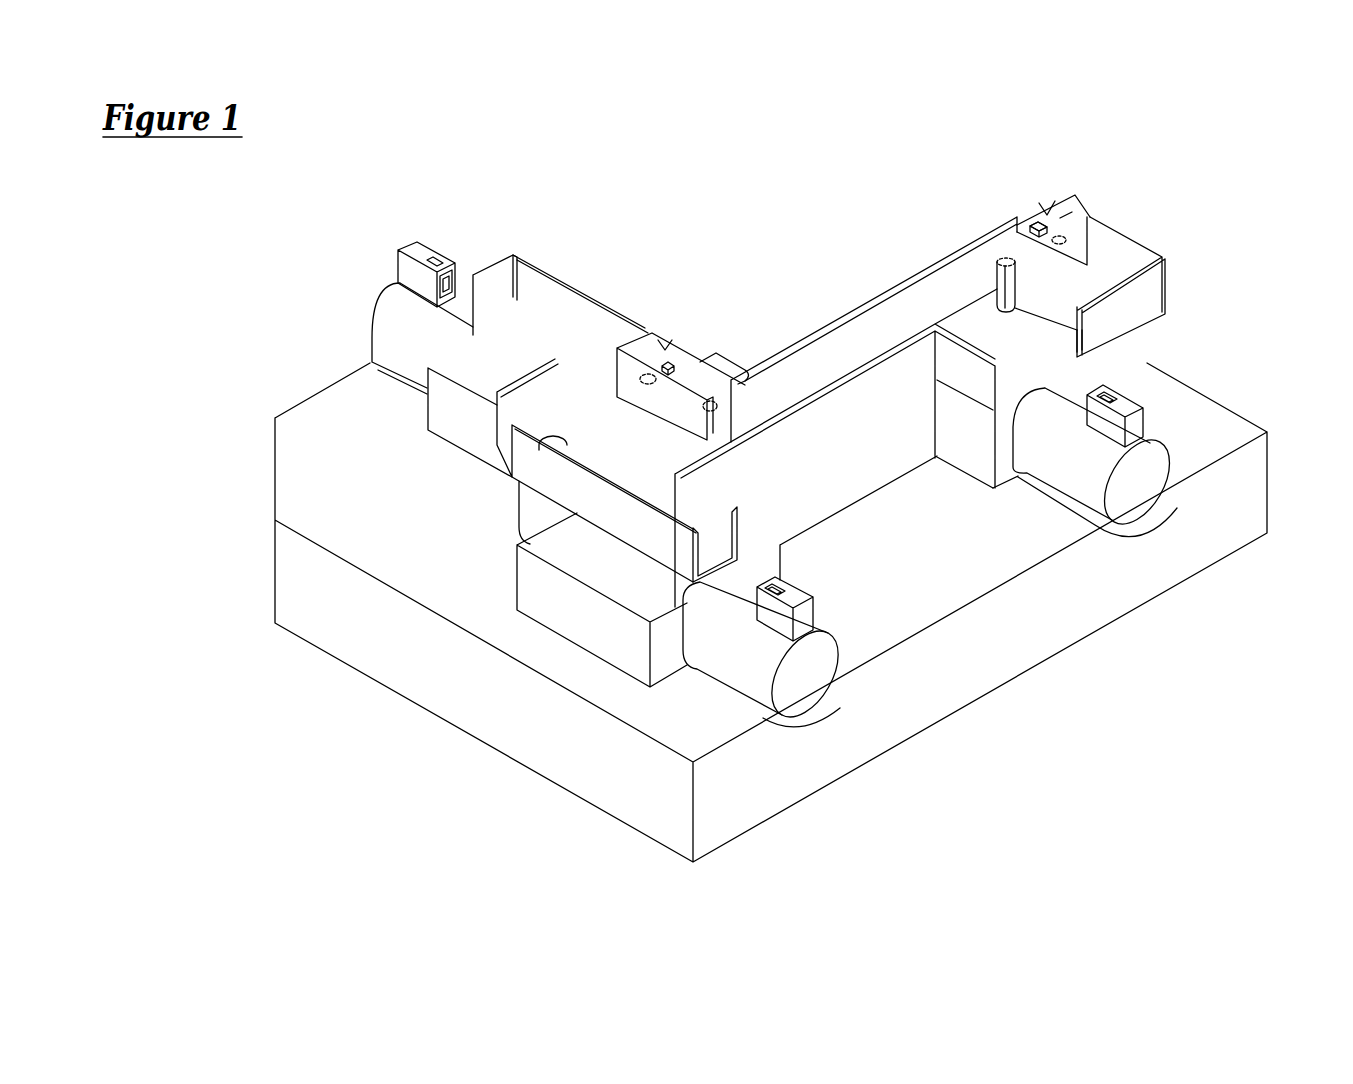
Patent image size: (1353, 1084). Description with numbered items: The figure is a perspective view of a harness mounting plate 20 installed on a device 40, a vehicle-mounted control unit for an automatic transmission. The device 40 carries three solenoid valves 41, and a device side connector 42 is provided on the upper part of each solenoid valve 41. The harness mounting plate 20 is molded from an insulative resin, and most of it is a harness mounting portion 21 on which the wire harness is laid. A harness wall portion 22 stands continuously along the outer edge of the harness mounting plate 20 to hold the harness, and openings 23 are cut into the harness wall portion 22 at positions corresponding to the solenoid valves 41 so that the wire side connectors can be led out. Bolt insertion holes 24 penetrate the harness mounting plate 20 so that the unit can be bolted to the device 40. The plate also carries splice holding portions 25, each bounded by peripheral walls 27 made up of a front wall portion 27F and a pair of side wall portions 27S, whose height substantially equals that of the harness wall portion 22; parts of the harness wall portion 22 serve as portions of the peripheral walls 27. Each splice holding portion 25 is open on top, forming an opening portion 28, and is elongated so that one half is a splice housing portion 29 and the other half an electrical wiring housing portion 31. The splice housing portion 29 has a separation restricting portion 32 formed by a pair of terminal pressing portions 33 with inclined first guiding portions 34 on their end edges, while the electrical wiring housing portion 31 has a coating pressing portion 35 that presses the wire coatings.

The harness mounting plate 20 is at (607, 405).
The harness mounting portion 21 is at (578, 413).
The harness wall portion 22 is at (873, 313).
The openings 23 is at (512, 278).
The bolt insertion holes 24 is at (549, 437).
The splice holding portions 25 is at (665, 350).
The peripheral walls 27 is at (1124, 256).
The front wall portion 27F is at (1010, 245).
The side wall portions 27S is at (1050, 265).
The opening portions 28 is at (653, 345).
The splice housing portion 29 is at (677, 353).
The electrical wiring housing portion 31 is at (707, 377).
The separation restricting portion 32 is at (1038, 226).
The terminal pressing portions 33 is at (1033, 222).
The first guiding portions 34 is at (1067, 215).
The coating pressing portion 35 is at (1000, 247).
The device 40 is at (1007, 660).
The solenoid valves 41 is at (392, 322).
The device side connectors 42 is at (417, 248).